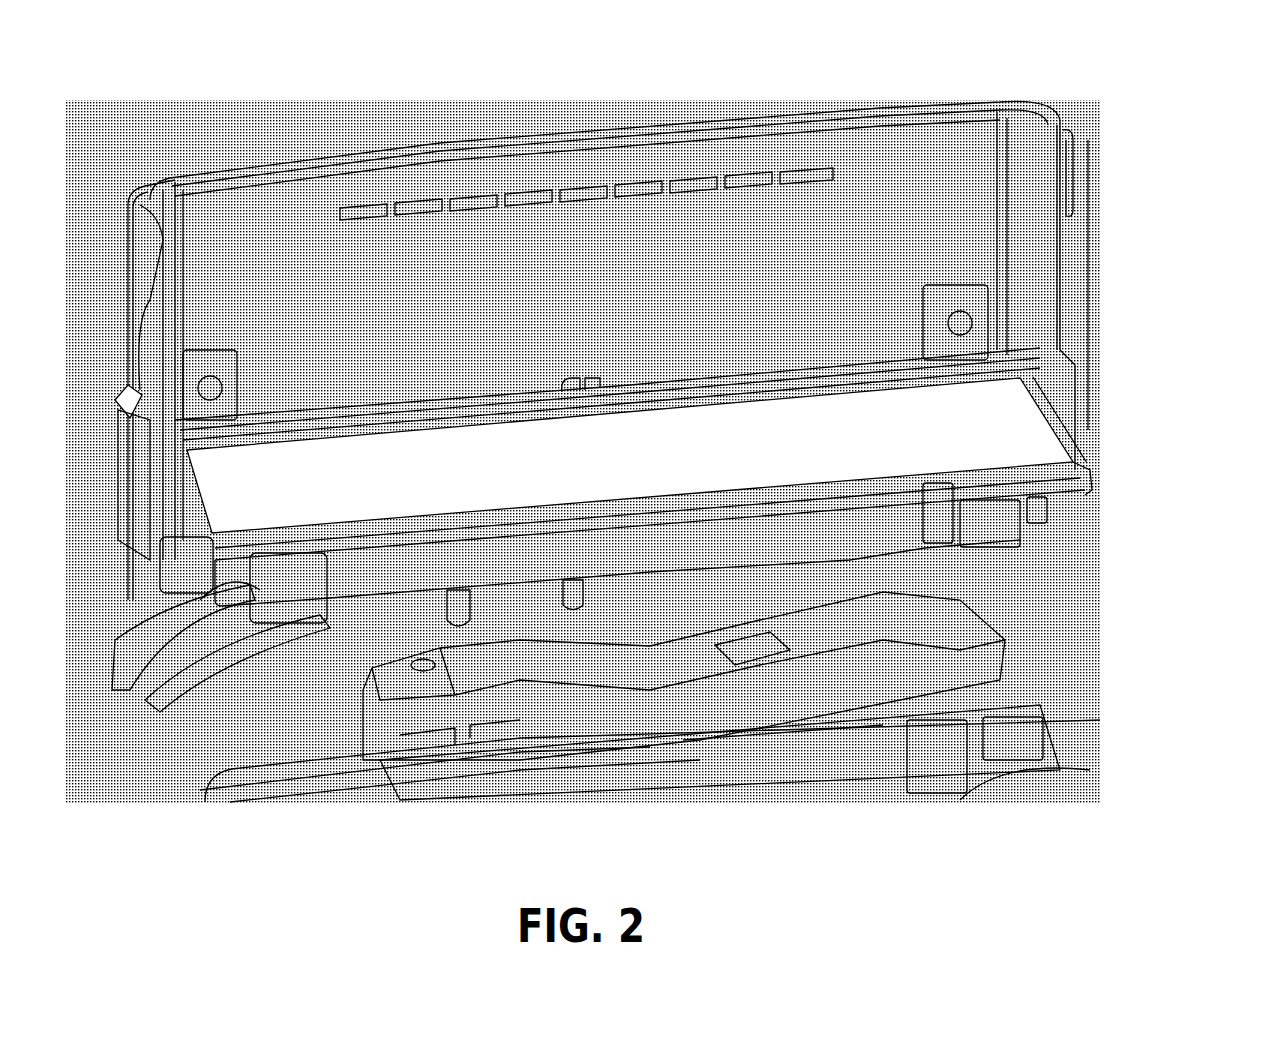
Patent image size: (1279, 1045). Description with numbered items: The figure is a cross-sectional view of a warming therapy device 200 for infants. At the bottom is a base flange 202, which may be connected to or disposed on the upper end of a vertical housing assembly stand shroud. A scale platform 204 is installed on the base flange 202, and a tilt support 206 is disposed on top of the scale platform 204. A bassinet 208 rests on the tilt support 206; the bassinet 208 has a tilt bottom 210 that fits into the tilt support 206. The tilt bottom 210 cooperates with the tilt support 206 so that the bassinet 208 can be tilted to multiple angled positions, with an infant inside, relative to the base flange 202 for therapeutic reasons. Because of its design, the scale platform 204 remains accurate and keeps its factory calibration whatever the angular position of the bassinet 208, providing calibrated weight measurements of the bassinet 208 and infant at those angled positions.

The warming therapy device 200 is at (167, 136).
The base flange 202 is at (850, 777).
The scale platform 204 is at (1033, 707).
The tilt support 206 is at (970, 622).
The bassinet 208 is at (602, 406).
The tilt bottom 210 is at (1080, 497).